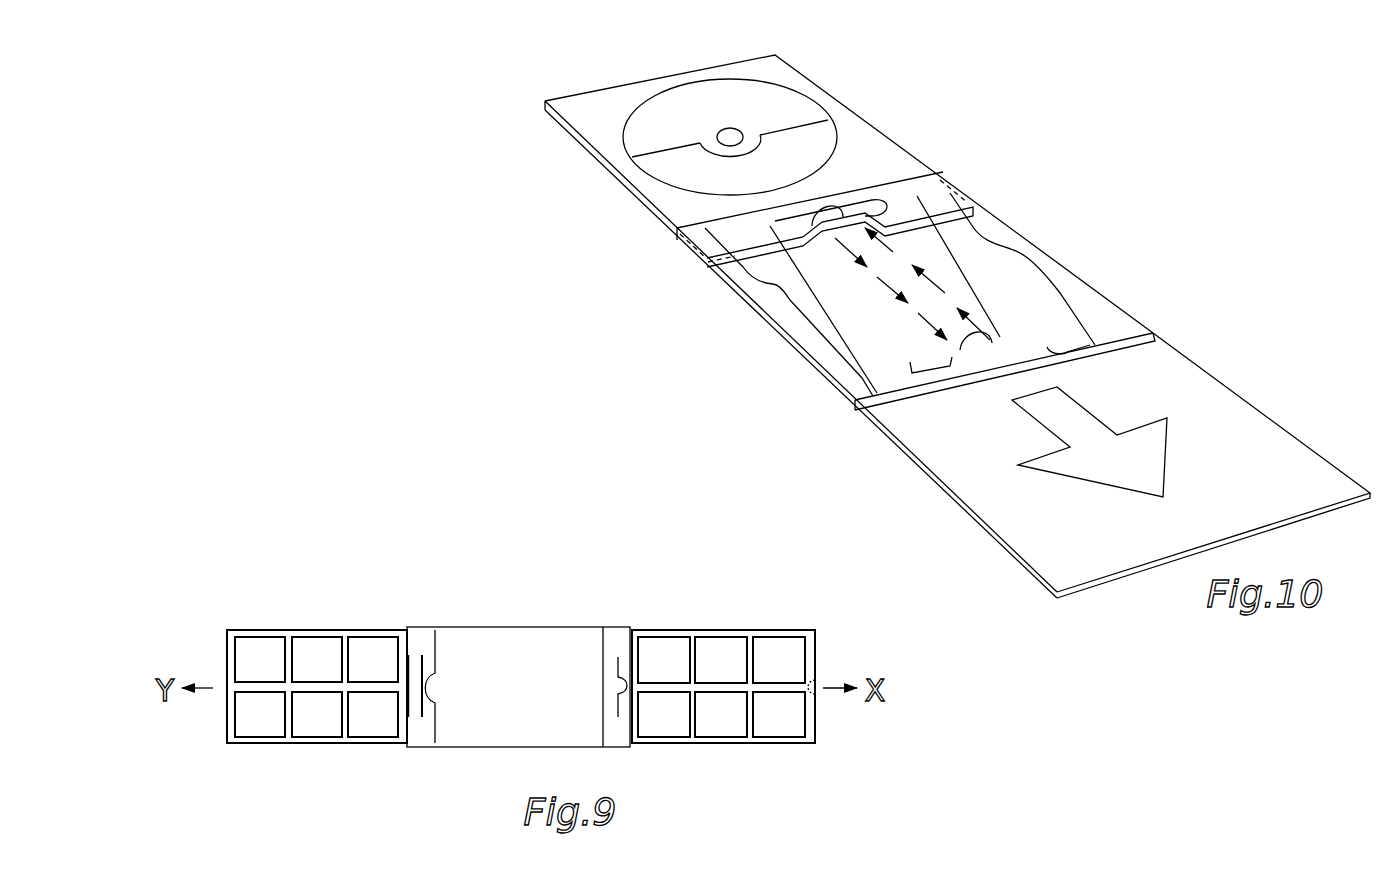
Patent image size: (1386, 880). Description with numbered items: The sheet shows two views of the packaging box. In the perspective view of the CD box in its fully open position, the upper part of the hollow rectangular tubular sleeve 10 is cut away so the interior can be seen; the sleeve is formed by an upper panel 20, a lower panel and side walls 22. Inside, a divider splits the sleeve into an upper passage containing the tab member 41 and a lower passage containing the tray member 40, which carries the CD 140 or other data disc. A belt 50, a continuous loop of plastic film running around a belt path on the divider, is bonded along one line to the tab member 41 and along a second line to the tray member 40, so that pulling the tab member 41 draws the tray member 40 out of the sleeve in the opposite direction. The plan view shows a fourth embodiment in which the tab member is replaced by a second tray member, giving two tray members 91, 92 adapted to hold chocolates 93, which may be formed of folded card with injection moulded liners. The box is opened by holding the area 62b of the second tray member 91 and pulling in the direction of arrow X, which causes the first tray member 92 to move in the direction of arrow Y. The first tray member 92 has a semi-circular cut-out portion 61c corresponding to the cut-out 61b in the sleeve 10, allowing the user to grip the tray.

In FIG. 9, the sleeve 10 is at (517, 617).
In FIG. 10, the upper panel 20 is at (1047, 258).
In FIG. 10, the side walls 22 is at (752, 313).
In FIG. 10, the tray member 40 is at (623, 182).
In FIG. 10, the tab member 41 is at (1238, 397).
In FIG. 10, the belt 50 is at (888, 215).
In FIG. 9, the cut-out 61b is at (625, 690).
In FIG. 9, the semi-circular cut-out portion 61c is at (433, 693).
In FIG. 9, the area 62b is at (815, 680).
In FIG. 9, the second tray member 91 is at (737, 745).
In FIG. 9, the first tray member 92 is at (313, 745).
In FIG. 9, the chocolates 93 is at (265, 655).
In FIG. 10, the CD 140 is at (787, 105).